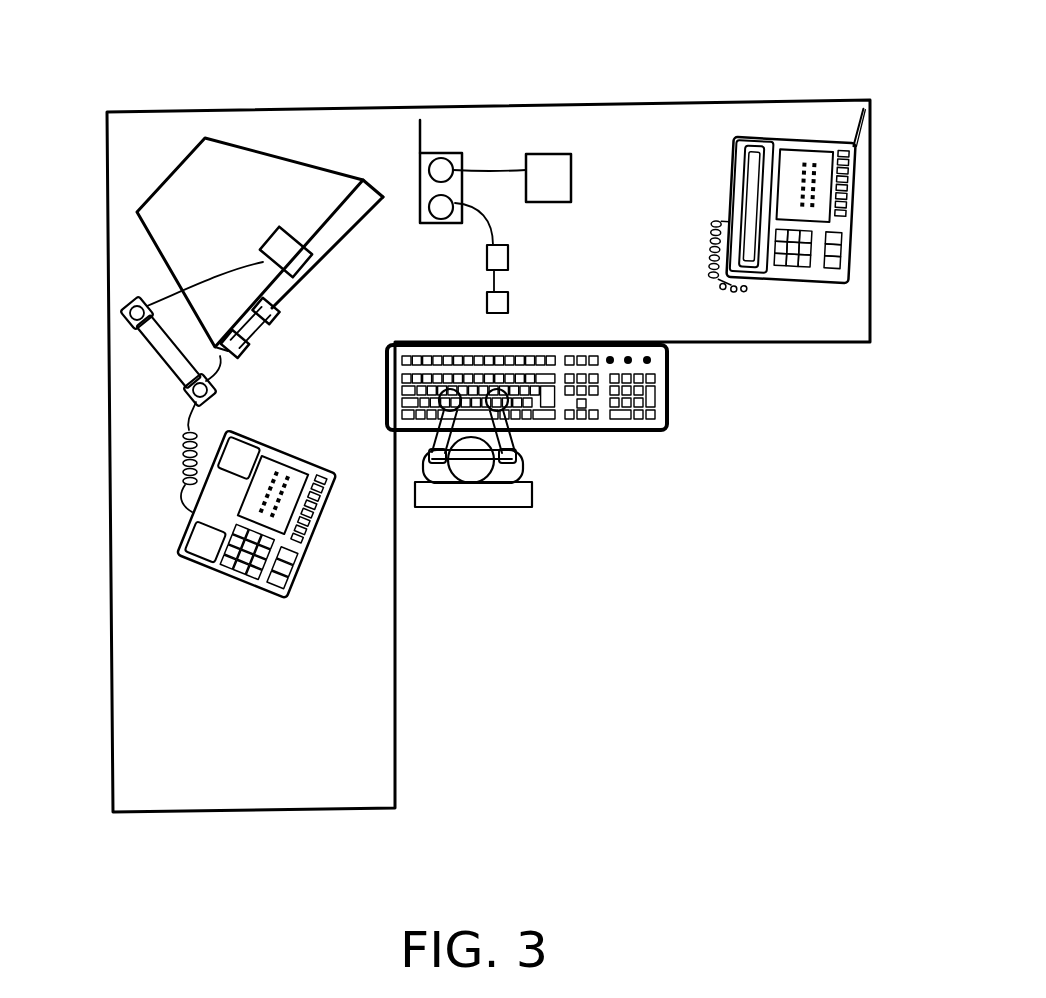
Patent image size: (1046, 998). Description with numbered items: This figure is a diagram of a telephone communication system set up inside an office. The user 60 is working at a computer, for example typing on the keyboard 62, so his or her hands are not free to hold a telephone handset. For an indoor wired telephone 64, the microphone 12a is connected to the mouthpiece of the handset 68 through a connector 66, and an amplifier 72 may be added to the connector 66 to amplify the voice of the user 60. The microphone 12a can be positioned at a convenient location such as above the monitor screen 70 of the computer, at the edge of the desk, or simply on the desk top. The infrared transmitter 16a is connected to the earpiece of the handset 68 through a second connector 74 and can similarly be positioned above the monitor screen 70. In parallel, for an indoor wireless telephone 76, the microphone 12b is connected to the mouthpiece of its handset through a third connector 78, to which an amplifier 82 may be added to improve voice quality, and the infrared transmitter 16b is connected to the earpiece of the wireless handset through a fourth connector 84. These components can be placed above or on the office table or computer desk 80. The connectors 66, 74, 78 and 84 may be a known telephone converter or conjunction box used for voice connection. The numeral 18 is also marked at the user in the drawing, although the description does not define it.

The office table 80 is at (670, 115).
The monitor screen 70 is at (210, 153).
The infrared transmitter 16a is at (286, 238).
The microphone 12a is at (280, 316).
The amplifier 72 is at (246, 351).
The second connector 74 is at (127, 306).
The handset 68 is at (175, 357).
The connector 66 is at (194, 404).
The indoor wired telephone 64 is at (175, 553).
The indoor wireless telephone 76 is at (420, 180).
The fourth connector 84 is at (452, 163).
The third connector 78 is at (443, 219).
The infrared transmitter 16b is at (560, 154).
The amplifier 82 is at (508, 258).
The microphone 12b is at (510, 302).
The keyboard 62 is at (668, 388).
The user 60 is at (510, 473).
The head of user 18 is at (467, 462).